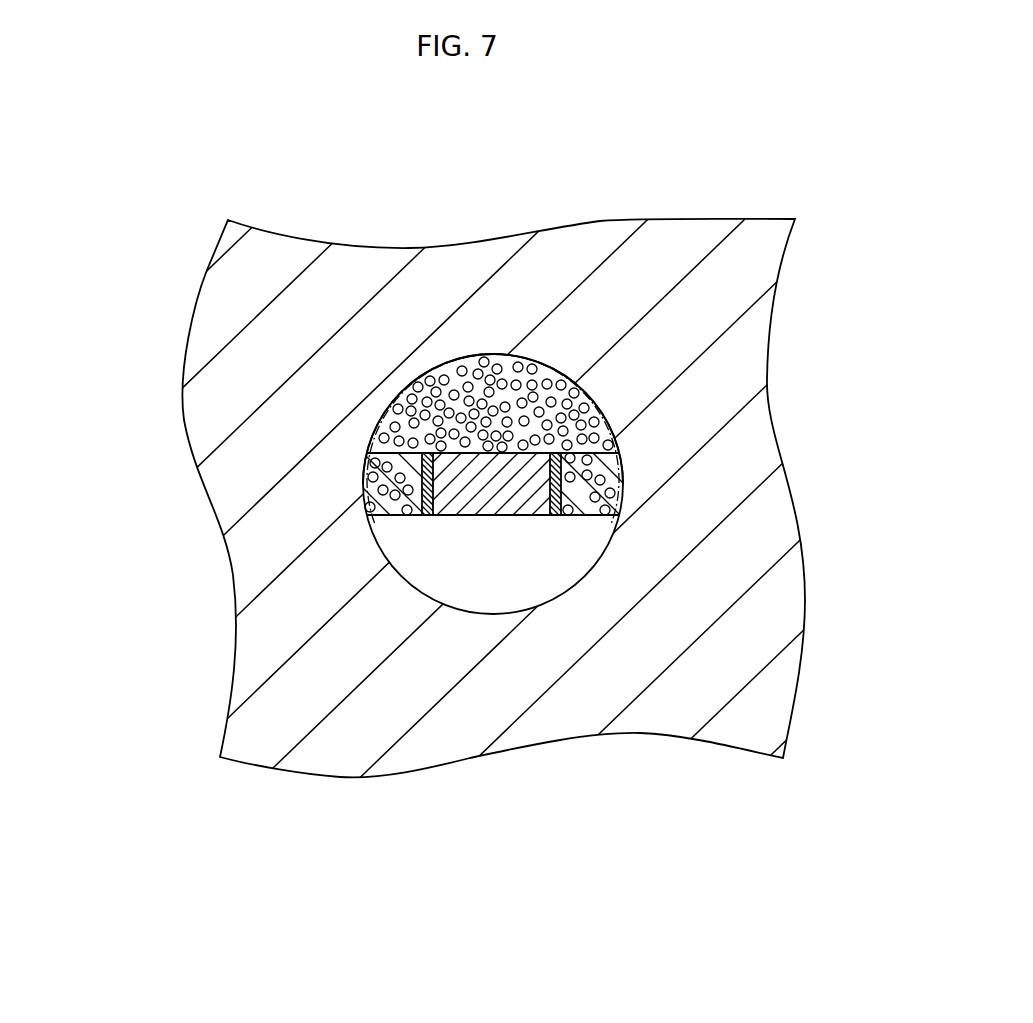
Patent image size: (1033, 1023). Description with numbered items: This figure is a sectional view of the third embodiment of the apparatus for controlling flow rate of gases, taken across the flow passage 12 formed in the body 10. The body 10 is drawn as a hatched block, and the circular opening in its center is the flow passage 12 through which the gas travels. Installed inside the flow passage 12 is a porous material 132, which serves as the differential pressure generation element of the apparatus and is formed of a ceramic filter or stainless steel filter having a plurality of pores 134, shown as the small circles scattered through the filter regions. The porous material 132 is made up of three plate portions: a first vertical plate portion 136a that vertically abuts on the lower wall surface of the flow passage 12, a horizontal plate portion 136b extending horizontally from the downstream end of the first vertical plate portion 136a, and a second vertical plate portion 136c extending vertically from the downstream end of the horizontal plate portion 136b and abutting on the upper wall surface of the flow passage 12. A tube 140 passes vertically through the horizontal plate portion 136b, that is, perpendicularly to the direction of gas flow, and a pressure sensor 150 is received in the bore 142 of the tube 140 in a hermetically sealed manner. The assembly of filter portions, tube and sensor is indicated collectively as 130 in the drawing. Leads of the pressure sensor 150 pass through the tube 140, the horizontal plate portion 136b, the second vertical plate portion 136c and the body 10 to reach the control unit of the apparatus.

The body 10 is at (230, 304).
The flow passage 12 is at (603, 427).
The electronic component 130 is at (400, 530).
The porous material 132 is at (490, 350).
The pores 134 is at (462, 371).
The first vertical plate portion 136a is at (512, 610).
The horizontal plate portion 136b is at (363, 470).
The second vertical plate portion 136c is at (528, 375).
The tube 140 is at (412, 515).
The bore 142 is at (525, 515).
The pressure sensor 150 is at (477, 470).